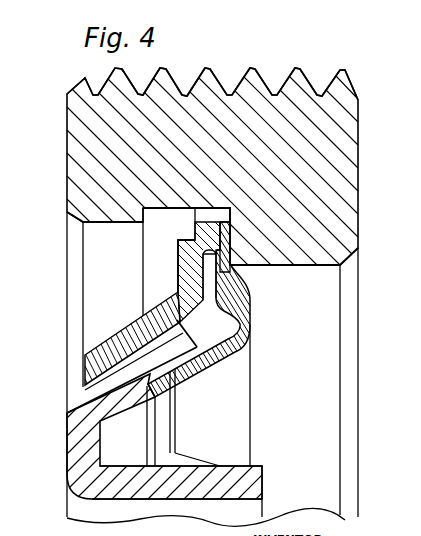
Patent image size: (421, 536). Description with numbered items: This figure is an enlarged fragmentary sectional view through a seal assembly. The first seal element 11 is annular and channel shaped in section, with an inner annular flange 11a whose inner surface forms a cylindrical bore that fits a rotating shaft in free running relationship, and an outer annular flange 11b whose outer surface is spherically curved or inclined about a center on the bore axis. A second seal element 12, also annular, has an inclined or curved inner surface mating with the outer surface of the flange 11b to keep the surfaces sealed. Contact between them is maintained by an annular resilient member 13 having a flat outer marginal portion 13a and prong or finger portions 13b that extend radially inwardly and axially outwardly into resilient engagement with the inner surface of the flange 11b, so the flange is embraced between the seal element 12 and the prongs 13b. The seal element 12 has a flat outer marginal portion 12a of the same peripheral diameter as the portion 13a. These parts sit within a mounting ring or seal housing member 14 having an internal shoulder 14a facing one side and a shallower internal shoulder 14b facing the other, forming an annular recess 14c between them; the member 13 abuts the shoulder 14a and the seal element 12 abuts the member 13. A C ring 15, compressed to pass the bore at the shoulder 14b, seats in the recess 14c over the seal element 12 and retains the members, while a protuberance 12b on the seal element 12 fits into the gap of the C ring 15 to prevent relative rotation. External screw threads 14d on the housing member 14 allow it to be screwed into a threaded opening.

The first seal element 11 is at (64, 443).
The inner annular flange 11a is at (310, 485).
The outer annular flange 11b is at (95, 348).
The second seal element 12 is at (130, 322).
The flat outer marginal portion 12a is at (208, 230).
The protuberance 12b is at (178, 257).
The annular resilient member 13 is at (252, 338).
The flat outer marginal portion 13a is at (287, 230).
The prong or finger portions 13b is at (175, 420).
The mounting ring or seal housing member 14 is at (82, 136).
The internal shoulder 14a is at (285, 257).
The internal shoulder 14b is at (143, 209).
The annular recess 14c is at (200, 208).
The external screw threads 14d is at (283, 80).
The C ring 15 is at (157, 238).